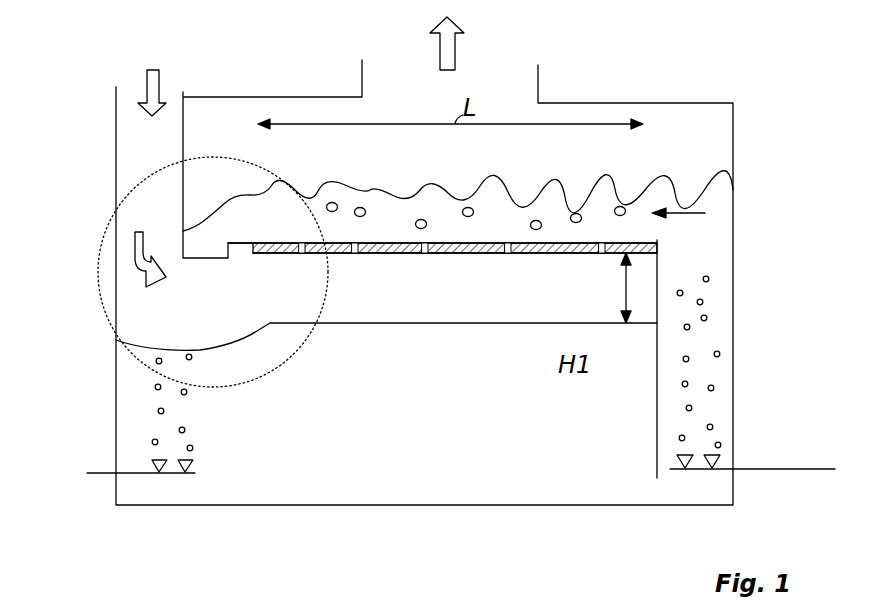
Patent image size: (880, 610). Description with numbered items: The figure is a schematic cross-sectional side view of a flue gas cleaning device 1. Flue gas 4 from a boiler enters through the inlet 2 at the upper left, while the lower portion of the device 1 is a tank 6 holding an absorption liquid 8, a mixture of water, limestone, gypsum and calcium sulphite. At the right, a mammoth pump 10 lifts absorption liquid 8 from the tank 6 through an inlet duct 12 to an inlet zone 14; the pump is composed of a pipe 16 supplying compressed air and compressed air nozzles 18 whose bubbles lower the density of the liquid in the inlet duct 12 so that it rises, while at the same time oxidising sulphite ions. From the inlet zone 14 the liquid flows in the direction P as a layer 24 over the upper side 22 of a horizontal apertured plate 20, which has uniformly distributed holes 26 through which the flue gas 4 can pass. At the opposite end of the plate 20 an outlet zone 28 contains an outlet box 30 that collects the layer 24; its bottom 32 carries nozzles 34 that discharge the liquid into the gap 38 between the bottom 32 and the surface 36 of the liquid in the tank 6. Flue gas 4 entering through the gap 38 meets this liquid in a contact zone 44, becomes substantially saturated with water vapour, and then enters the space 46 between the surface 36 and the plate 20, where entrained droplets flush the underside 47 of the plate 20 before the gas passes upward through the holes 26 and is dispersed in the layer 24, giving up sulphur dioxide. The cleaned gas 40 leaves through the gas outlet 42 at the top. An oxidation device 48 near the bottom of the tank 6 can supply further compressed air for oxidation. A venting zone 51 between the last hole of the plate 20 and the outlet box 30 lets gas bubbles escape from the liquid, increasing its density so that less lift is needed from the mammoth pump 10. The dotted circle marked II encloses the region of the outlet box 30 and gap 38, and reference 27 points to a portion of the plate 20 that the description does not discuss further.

The device 1 is at (705, 90).
The inlet 2 is at (116, 107).
The flue gas 4 is at (147, 85).
The tank 6 is at (275, 505).
The absorption liquid 8 is at (449, 493).
The mammoth pump 10 is at (795, 468).
The inlet duct 12 is at (733, 310).
The inlet zone 14 is at (700, 230).
The pipe 16 is at (780, 470).
The compressed air nozzles 18 is at (712, 452).
The apertured plate 20 is at (533, 257).
The upper side 22 is at (588, 243).
The layer 24 is at (490, 200).
The holes 26 is at (357, 255).
The plate segment 27 is at (300, 255).
The outlet zone 28 is at (205, 234).
The outlet box 30 is at (188, 262).
The bottom 32 is at (222, 262).
The nozzles 34 is at (205, 262).
The surface 36 is at (405, 314).
The gap 38 is at (205, 326).
The gas 40 is at (456, 50).
The outlet 42 is at (362, 66).
The contact zone 44 is at (225, 330).
The space 46 is at (476, 307).
The underside 47 is at (570, 258).
The oxidation device 48 is at (101, 471).
The venting zone 51 is at (273, 228).
The direction of flow P is at (695, 192).
The detail region II is at (103, 222).